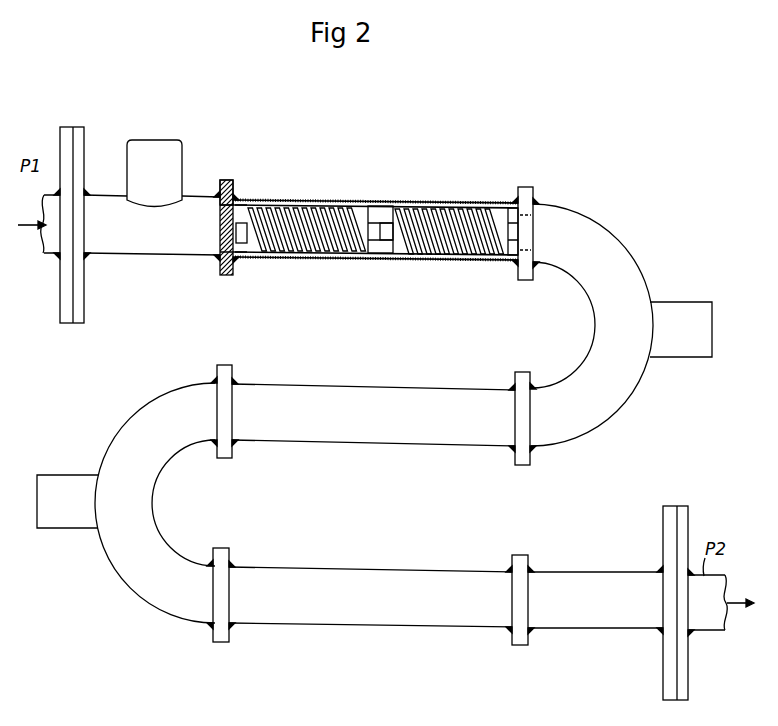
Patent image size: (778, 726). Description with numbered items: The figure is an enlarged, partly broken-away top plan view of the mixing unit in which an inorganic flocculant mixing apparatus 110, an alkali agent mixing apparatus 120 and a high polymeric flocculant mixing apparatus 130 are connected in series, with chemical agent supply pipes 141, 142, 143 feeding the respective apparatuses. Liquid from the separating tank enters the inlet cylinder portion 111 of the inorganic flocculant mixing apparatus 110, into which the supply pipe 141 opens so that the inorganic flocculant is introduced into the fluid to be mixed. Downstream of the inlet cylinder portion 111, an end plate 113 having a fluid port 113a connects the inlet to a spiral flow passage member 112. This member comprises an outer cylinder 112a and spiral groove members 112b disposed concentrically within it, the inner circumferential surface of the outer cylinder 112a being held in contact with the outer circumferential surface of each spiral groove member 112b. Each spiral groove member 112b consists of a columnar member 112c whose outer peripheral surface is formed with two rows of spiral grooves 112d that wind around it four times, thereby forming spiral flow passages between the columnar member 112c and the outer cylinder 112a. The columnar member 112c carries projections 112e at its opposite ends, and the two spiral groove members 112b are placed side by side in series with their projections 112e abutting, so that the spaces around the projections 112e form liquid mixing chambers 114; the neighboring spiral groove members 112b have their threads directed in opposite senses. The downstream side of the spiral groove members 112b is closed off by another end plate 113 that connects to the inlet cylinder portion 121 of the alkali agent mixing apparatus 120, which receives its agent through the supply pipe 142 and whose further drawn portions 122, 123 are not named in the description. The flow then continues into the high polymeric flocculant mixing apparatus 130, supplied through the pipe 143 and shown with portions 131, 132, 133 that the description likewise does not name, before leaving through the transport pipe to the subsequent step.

The inorganic flocculant mixing apparatus 110 is at (322, 258).
The inlet cylinder portion 111 is at (147, 256).
The spiral flow passage member 112 is at (432, 203).
The outer cylinder 112a is at (466, 203).
The spiral groove member 112b is at (408, 261).
The columnar member 112c is at (330, 212).
The spiral grooves 112d is at (301, 201).
The projections 112e is at (243, 222).
The end plate 113 is at (224, 277).
The fluid port 113a is at (220, 203).
The liquid mixing chambers 114 is at (384, 212).
The alkali agent mixing apparatus 120 is at (378, 444).
The inlet cylinder portion 121 is at (572, 375).
The straight pipe 122 is at (304, 442).
The flanges 123 is at (222, 459).
The high polymeric flocculant mixing apparatus 130 is at (388, 628).
The U-bend pipe 131 is at (132, 588).
The straight pipe 132 is at (312, 626).
The flanges 133 is at (221, 644).
The supply pipe 141 is at (184, 148).
The chemical agent supply pipe 142 is at (689, 302).
The chemical agent supply pipe 143 is at (58, 475).